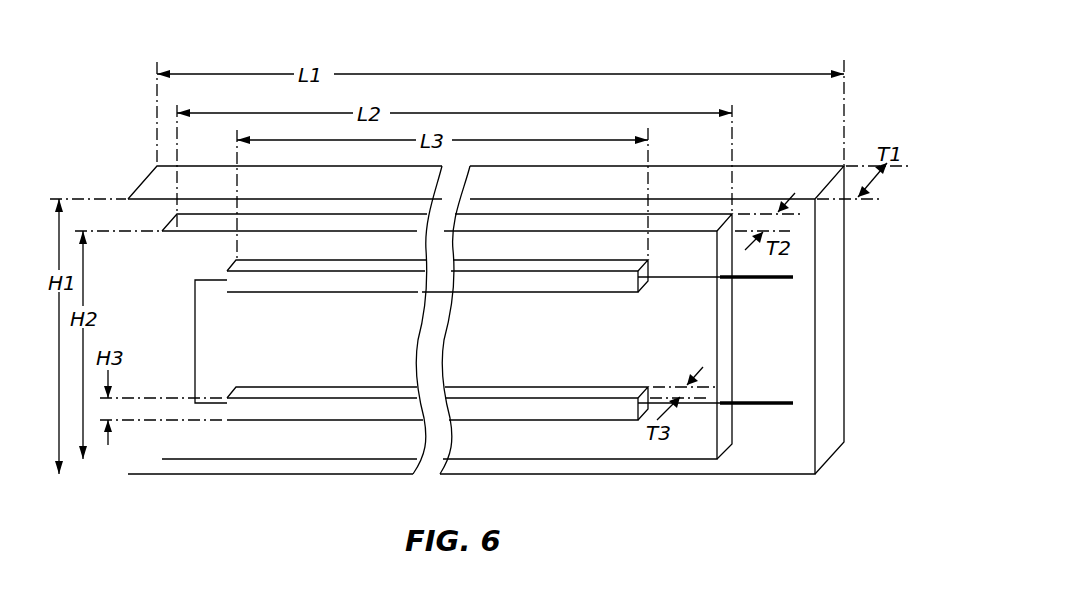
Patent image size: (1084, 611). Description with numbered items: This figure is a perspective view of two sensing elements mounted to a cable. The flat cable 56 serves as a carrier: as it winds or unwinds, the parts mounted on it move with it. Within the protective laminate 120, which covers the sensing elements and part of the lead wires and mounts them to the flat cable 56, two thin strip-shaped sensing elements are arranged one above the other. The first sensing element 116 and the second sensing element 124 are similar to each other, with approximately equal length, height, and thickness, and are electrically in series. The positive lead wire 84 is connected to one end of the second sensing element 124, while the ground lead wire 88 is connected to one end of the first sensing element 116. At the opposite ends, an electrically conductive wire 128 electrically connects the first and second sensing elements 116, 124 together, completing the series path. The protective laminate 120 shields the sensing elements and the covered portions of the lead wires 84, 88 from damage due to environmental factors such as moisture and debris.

The flat cable 56 is at (768, 455).
The positive lead wire 84 is at (780, 270).
The ground lead wire 88 is at (783, 397).
The sensing element 116 is at (523, 410).
The protective laminate 120 is at (212, 445).
The second sensing element 124 is at (583, 280).
The electrically conductive wire 128 is at (195, 365).